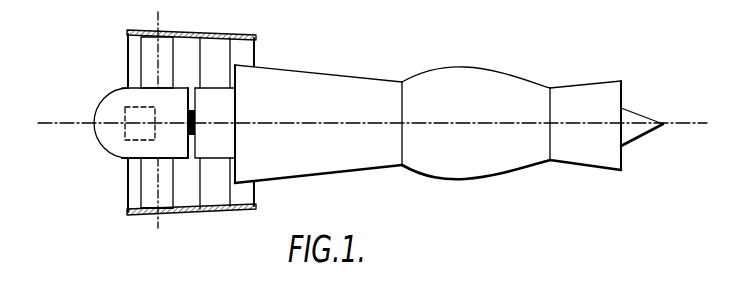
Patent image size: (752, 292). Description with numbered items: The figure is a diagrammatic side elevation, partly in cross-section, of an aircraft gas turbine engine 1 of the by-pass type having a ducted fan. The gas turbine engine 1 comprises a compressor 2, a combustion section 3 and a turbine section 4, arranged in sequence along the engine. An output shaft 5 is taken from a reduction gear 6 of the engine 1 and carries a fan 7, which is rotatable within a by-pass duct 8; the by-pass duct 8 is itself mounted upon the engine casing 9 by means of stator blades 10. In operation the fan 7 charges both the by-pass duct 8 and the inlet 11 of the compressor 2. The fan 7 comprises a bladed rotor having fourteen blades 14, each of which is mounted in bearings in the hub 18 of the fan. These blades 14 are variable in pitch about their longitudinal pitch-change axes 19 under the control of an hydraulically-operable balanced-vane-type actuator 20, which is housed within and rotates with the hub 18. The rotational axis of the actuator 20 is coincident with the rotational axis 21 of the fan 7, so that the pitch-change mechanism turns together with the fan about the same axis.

The gas turbine engine 1 is at (389, 70).
The compressor 2 is at (345, 153).
The combustion section 3 is at (463, 158).
The turbine section 4 is at (577, 150).
The output shaft 5 is at (194, 120).
The reduction gear 6 is at (218, 135).
The fan 7 is at (171, 124).
The by-pass duct 8 is at (163, 32).
The engine casing 9 is at (217, 93).
The stator blades 10 is at (213, 42).
The inlet 11 is at (227, 170).
The blades 14 is at (145, 193).
The hub 18 is at (107, 133).
The longitudinal pitch-change axes 19 is at (162, 194).
The hydraulically-operable balanced-vane-type actuator 20 is at (142, 138).
The rotational axis 21 is at (84, 122).